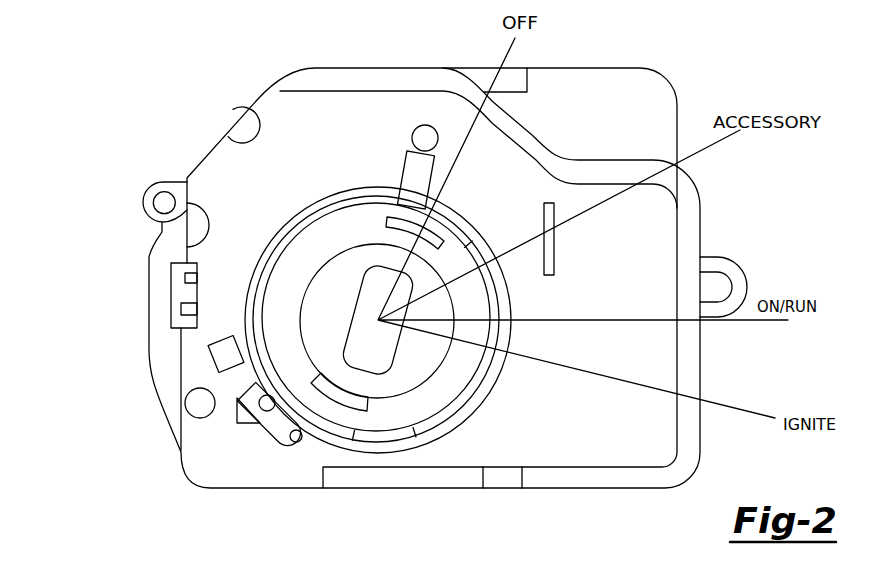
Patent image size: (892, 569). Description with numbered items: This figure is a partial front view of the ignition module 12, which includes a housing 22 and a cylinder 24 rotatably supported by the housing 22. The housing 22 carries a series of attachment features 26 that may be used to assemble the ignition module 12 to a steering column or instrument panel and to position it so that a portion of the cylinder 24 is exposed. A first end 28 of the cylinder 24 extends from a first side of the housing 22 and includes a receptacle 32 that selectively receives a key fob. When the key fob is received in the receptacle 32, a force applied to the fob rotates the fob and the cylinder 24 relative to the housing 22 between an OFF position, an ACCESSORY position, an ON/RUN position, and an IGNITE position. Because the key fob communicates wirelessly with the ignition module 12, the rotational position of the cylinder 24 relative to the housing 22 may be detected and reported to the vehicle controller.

The ignition module 12 is at (163, 163).
The housing 22 is at (222, 125).
The cylinder 24 is at (290, 320).
The attachment features 26 is at (147, 210).
The first end 28 is at (363, 250).
The receptacle 32 is at (367, 302).